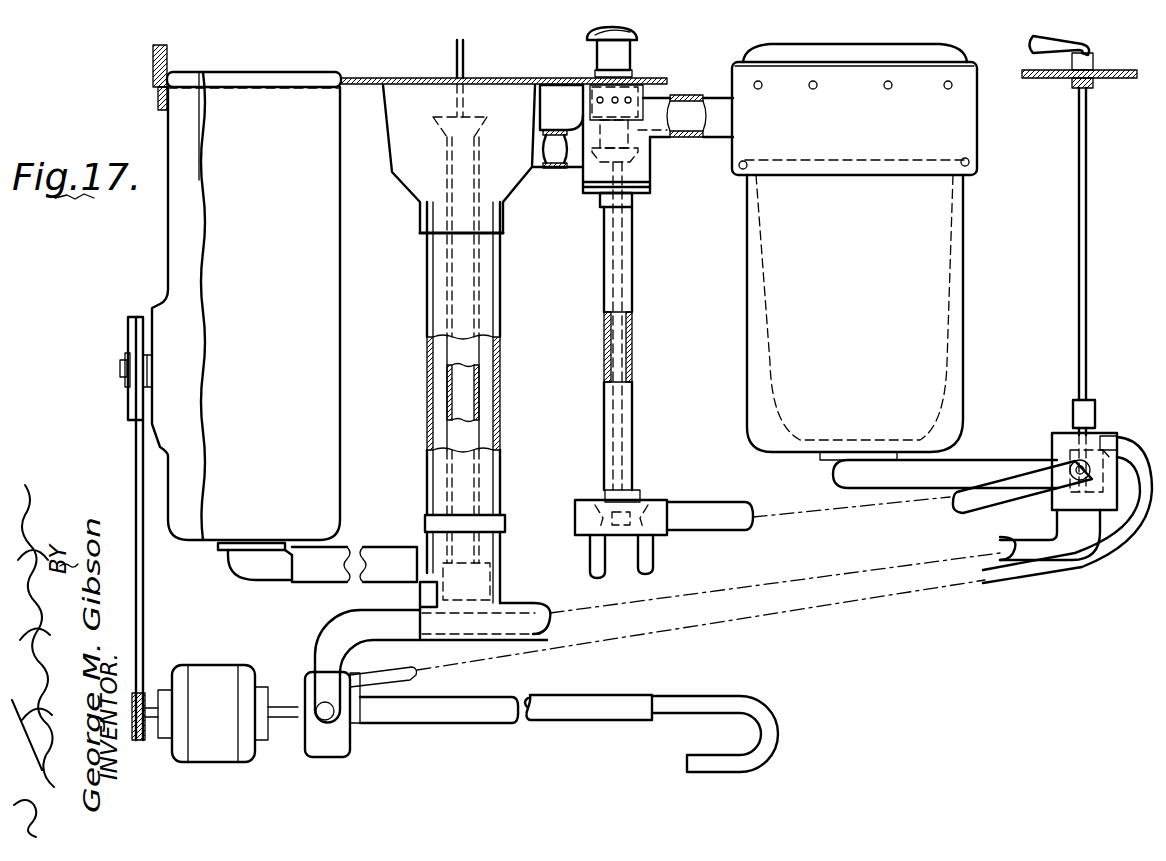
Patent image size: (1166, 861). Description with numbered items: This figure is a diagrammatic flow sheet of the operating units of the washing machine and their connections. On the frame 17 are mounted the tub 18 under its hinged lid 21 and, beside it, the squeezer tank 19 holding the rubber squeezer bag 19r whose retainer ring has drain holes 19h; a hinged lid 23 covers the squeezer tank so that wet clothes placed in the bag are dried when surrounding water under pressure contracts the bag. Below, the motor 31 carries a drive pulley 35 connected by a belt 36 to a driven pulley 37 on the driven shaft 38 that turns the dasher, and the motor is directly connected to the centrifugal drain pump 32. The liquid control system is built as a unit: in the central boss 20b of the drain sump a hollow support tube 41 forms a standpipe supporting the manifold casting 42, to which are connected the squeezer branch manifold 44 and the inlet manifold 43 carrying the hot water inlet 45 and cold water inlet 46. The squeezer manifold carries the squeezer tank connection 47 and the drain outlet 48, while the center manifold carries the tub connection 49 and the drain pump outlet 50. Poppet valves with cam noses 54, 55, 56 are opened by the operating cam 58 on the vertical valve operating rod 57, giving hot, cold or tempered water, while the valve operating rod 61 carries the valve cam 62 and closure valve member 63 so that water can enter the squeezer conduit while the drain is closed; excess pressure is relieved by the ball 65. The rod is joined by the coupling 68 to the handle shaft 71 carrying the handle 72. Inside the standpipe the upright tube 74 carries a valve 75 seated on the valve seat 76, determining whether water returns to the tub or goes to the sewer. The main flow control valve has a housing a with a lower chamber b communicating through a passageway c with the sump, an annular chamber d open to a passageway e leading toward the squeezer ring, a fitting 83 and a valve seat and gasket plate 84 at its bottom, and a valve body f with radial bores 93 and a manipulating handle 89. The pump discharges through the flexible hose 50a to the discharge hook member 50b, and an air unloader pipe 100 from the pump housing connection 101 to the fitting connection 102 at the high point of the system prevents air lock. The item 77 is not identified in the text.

The frame 17 is at (153, 75).
The tub 18 is at (205, 241).
The squeezer tank 19 is at (885, 252).
The drain holes 19h is at (762, 90).
The rubber squeezer bag 19r is at (950, 266).
The central boss of the drain sump 20b is at (417, 194).
The hinged lid 21 is at (207, 43).
The hinged lid 23 is at (862, 52).
The motor 31 is at (216, 748).
The drain pump 32 is at (345, 730).
The drive pulley 35 is at (143, 700).
The belt 36 is at (146, 582).
The driven pulley 37 is at (128, 528).
The driven shaft 38 is at (120, 368).
The hollow support tube 41 is at (502, 360).
The manifold casting 42 is at (690, 611).
The inlet manifold 43 is at (712, 515).
The squeezer branch manifold 44 is at (1089, 450).
The hot water inlet 45 is at (655, 553).
The cold water inlet 46 is at (593, 548).
The squeezer tank in and out connection 47 is at (955, 466).
The drain outlet 48 is at (540, 612).
The washer tub inlet and outlet connection 49 is at (366, 548).
The drain pump outlet 50 is at (343, 622).
The flexible hose 50a is at (535, 708).
The discharge hook member 50b is at (780, 730).
The cam nose 54 is at (607, 492).
The cam nose 55 is at (597, 505).
The cam nose 56 is at (1068, 465).
The valve operating rod 57 is at (620, 344).
The operating cam 58 is at (604, 494).
The valve operating rod 61 is at (1092, 425).
The valve cam 62 is at (1058, 528).
The closure valve member 63 is at (1112, 500).
The relief ball 65 is at (1108, 438).
The coupling 68 is at (1075, 405).
The handle shaft 71 is at (1078, 191).
The handle 72 is at (1090, 40).
The upright tube 74 is at (443, 147).
The valve 75 is at (490, 576).
The valve seat 76 is at (420, 593).
The pipe 77 is at (466, 46).
The fitting 83 is at (606, 198).
The valve seat and gasket plate 84 is at (641, 185).
The manipulating handle 89 is at (594, 36).
The radial bores 93 is at (641, 85).
The air unloader pipe 100 is at (412, 672).
The pump housing connection 101 is at (358, 671).
The liquid conduit fitting connection 102 is at (1110, 450).
The valve housing a is at (642, 165).
The lower chamber b is at (640, 138).
The passageway c is at (556, 166).
The annular chamber d is at (582, 118).
The passageway e is at (683, 133).
The valve body f is at (645, 108).